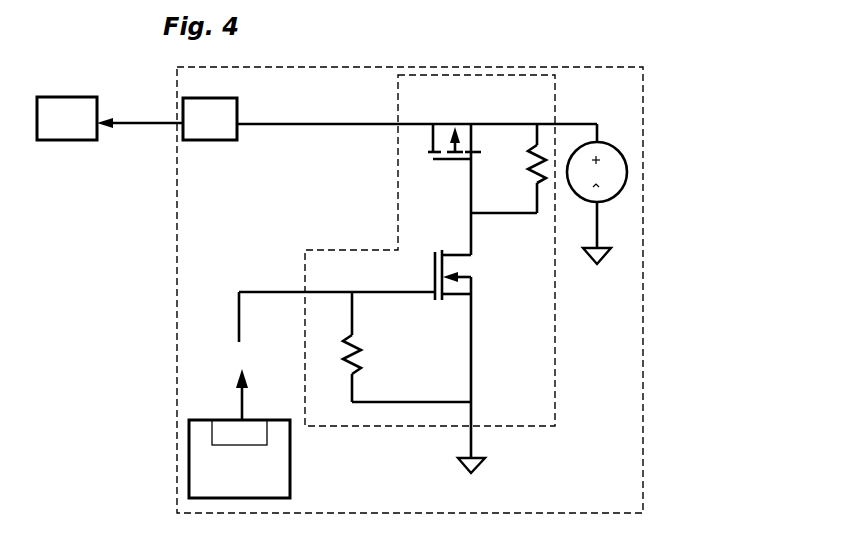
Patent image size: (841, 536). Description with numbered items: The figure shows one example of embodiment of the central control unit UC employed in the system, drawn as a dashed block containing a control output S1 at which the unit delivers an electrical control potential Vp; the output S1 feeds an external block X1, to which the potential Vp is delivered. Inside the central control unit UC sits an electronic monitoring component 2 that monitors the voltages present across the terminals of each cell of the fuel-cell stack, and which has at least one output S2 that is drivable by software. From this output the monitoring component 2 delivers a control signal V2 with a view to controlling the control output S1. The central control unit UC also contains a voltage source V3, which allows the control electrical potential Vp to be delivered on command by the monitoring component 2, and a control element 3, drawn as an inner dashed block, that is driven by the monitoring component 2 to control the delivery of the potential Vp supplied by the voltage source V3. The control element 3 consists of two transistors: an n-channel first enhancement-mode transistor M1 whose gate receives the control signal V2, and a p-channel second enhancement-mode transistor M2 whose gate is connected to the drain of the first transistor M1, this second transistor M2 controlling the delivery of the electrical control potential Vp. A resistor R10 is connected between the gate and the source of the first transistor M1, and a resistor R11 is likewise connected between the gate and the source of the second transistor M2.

The central control unit UC is at (643, 105).
The control element 3 is at (555, 380).
The electronic component for monitoring voltages 2 is at (239, 459).
The output S2 is at (239, 432).
The control output S1 is at (210, 119).
The external connection X1 is at (67, 118).
The electrical control potential Vp is at (140, 115).
The control signal V2 is at (242, 356).
The voltage source V3 is at (599, 193).
The n-channel first enhancement-mode transistor M1 is at (440, 344).
The p-channel second enhancement-mode transistor M2 is at (454, 169).
The resistor R10 is at (407, 347).
The resistor R11 is at (508, 168).